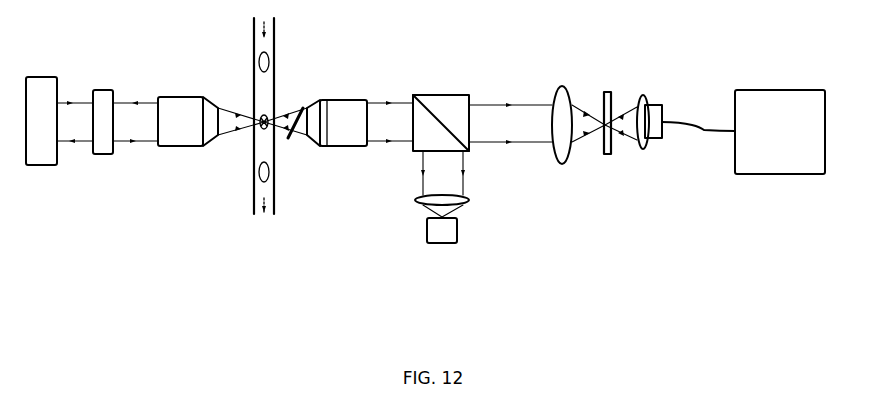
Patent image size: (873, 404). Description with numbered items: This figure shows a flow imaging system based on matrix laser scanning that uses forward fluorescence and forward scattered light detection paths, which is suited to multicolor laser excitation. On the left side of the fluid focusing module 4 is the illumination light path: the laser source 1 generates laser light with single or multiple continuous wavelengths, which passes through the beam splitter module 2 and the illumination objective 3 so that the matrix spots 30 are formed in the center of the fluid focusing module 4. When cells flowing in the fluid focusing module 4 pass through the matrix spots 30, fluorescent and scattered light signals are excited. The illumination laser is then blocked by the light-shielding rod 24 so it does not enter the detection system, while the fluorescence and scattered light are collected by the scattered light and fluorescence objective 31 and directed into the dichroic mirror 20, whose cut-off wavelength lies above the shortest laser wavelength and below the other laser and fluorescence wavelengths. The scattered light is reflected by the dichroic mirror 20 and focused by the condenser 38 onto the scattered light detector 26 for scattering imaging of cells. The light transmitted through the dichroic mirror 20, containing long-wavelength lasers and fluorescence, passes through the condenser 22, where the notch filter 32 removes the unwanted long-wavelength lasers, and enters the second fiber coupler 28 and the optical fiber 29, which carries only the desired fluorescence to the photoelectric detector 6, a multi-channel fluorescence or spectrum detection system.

The laser source 1 is at (40, 75).
The beam splitter module 2 is at (99, 88).
The illumination objective 3 is at (183, 150).
The fluid focusing module 4 is at (279, 50).
The matrix spots 30 is at (270, 98).
The light-shielding rod 24 is at (297, 102).
The scattered light and fluorescence objective 31 is at (351, 152).
The dichroic mirror 20 is at (442, 87).
The condenser 22 is at (563, 173).
The notch filter 32 is at (603, 88).
The second fiber coupler 28 is at (655, 157).
The optical fiber 29 is at (702, 117).
The photoelectric detector 6 is at (780, 85).
The condenser 38 is at (414, 200).
The scattered light detector 26 is at (442, 252).